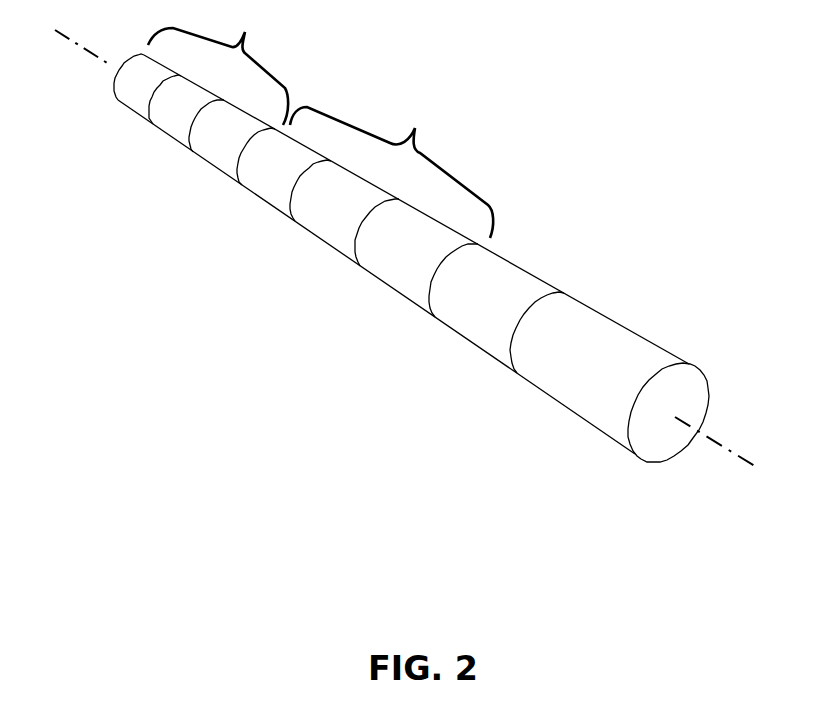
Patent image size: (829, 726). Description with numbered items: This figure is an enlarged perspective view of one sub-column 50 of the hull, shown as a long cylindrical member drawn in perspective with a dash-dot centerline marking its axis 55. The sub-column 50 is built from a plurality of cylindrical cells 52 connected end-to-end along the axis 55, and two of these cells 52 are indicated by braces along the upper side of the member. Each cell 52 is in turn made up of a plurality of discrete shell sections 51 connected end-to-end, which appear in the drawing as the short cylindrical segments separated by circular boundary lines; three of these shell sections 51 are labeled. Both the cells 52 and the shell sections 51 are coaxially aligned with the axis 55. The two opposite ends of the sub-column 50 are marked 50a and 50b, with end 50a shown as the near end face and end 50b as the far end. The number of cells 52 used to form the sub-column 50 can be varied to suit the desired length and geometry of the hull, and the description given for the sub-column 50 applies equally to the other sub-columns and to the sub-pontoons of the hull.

The sub-column 50 is at (541, 115).
The first end of rod 50a is at (647, 450).
The second end of rod 50b is at (100, 83).
The shell section 51 is at (213, 154).
The cylindrical cell 52 is at (320, 119).
The axis 55 is at (730, 451).